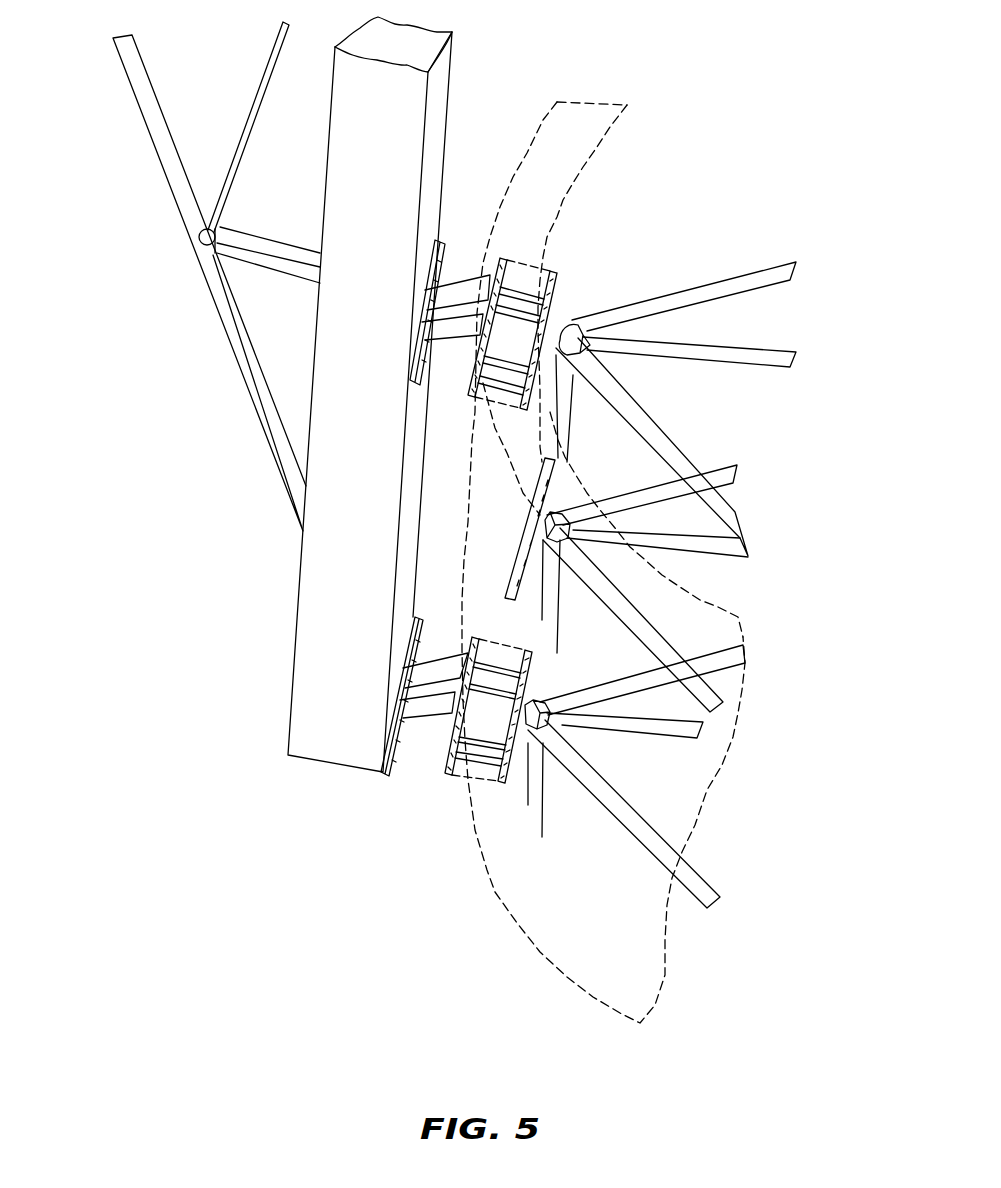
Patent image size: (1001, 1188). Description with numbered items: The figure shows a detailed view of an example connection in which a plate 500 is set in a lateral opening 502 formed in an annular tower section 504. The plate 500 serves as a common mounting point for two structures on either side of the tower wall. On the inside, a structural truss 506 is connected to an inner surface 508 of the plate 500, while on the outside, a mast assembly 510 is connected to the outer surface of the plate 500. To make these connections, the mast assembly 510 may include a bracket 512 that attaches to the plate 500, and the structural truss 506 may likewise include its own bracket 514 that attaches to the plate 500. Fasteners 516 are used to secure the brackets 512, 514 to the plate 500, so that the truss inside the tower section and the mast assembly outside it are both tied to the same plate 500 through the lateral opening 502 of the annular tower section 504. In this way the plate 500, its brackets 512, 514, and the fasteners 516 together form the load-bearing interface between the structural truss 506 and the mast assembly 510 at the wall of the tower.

The plate 500 is at (523, 267).
The lateral opening 502 is at (434, 767).
The annular tower section 504 is at (495, 892).
The structural truss 506 is at (733, 503).
The inner surface 508 is at (610, 365).
The mast assembly 510 is at (332, 528).
The bracket 512 is at (458, 375).
The bracket 514 is at (545, 740).
The fasteners 516 is at (477, 763).